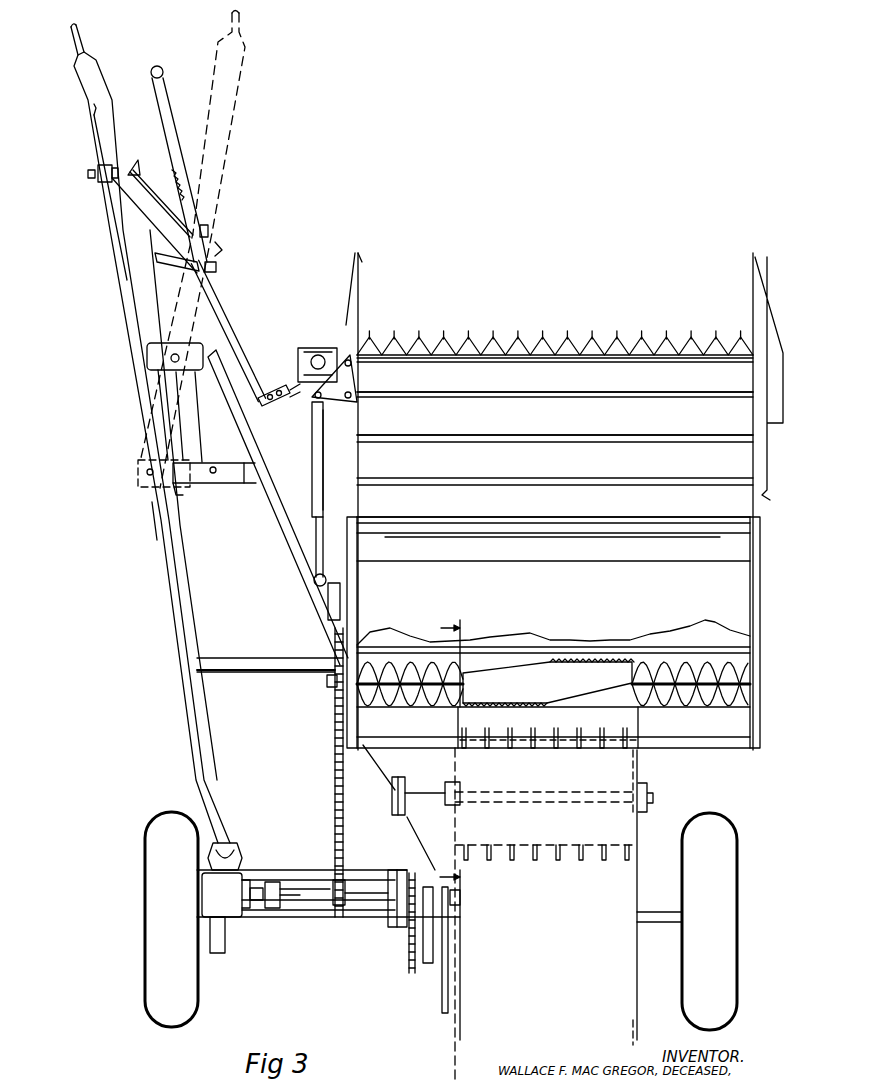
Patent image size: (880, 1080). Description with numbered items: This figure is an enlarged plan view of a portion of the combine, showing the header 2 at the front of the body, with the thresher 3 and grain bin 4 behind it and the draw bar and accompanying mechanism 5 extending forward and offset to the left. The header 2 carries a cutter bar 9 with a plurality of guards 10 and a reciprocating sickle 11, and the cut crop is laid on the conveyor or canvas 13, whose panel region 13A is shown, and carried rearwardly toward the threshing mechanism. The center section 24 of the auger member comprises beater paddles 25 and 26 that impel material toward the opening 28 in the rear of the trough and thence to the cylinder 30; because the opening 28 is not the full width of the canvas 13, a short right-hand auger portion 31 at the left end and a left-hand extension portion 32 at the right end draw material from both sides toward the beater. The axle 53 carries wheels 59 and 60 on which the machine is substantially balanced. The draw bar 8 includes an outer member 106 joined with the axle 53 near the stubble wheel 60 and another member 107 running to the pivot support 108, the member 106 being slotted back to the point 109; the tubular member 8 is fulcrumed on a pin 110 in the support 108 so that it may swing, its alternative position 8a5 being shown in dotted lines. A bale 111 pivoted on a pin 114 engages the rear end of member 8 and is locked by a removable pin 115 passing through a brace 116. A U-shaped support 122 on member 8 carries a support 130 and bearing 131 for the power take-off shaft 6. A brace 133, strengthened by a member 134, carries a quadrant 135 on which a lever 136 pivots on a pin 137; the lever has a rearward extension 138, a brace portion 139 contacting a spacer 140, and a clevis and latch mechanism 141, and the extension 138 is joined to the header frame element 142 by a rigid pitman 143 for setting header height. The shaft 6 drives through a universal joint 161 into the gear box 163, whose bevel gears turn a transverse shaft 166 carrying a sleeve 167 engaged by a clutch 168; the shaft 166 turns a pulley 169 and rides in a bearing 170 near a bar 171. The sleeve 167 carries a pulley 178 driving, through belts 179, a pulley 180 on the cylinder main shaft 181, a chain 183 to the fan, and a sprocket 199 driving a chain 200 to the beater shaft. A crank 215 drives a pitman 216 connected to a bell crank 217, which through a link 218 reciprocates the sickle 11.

The header 2 is at (778, 490).
The thresher 3 is at (554, 914).
The grain container or bin 4 is at (457, 829).
The draw bar and accompanying mechanism 5 is at (275, 492).
The power take-off shaft 6 is at (165, 553).
The draw bar member 8 is at (118, 158).
The alternate position of bracket 8a5 is at (136, 478).
The cutter bar 9 is at (600, 328).
The guards 10 is at (395, 330).
The sickle 11 is at (652, 340).
The draper, canvas, or conveyor 13 is at (553, 510).
The shield panel 13A is at (437, 392).
The center section of auger member 24 is at (550, 627).
The beater paddle 25 is at (548, 681).
The beater paddle 26 is at (505, 694).
The opening 28 is at (548, 727).
The cylinder 30 is at (600, 735).
The short auger portion 31 is at (398, 676).
The extension portion 32 is at (690, 676).
The axle 53 is at (645, 920).
The wheel 59 is at (709, 921).
The stubble wheel 60 is at (171, 919).
The outer member 106 is at (165, 527).
The member 107 is at (287, 538).
The pivot or fulcrum support or box 108 is at (168, 358).
The point 109 is at (150, 500).
The pin 110 is at (168, 366).
The bale 111 is at (200, 462).
The pin 114 is at (215, 470).
The removable pin 115 is at (176, 490).
The brace 116 is at (238, 488).
The U shaped support 122 is at (102, 188).
The support 130 is at (88, 175).
The bearing 131 is at (97, 168).
The brace 133 is at (170, 255).
The member 134 is at (163, 198).
The quadrant 135 is at (208, 232).
The lever 136 is at (175, 145).
The pin 137 is at (222, 250).
The rearward extension 138 is at (240, 322).
The brace portion 139 is at (200, 300).
The spacer 140 is at (216, 268).
The clevis and latch mechanism 141 is at (210, 160).
The frame element 142 is at (300, 392).
The pitman 143 is at (280, 380).
The universal joint 161 is at (232, 840).
The gear box 163 is at (238, 912).
The transverse shaft 166 is at (258, 888).
The sleeve 167 is at (305, 890).
The clutch means 168 is at (272, 880).
The pulley 169 is at (452, 905).
The bearing 170 is at (430, 888).
The bar 171 is at (442, 995).
The pulley 178 is at (388, 885).
The belts 179 is at (398, 868).
The pulley 180 is at (392, 800).
The main shaft 181 is at (430, 793).
The chain 183 is at (408, 960).
The sprocket 199 is at (345, 860).
The chain 200 is at (343, 885).
The crank 215 is at (340, 592).
The pitman 216 is at (316, 517).
The bell crank member 217 is at (357, 380).
The link 218 is at (318, 348).